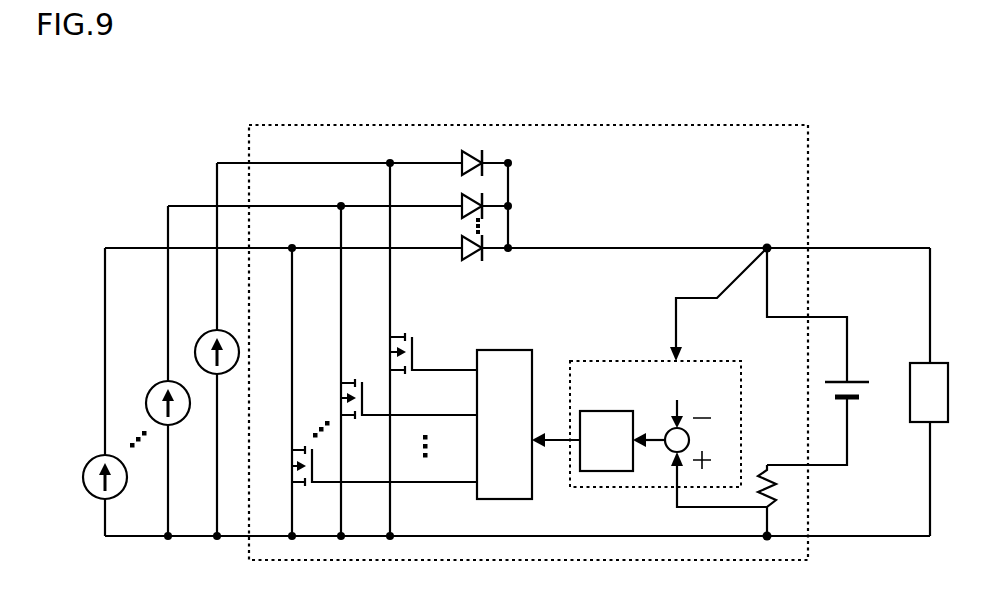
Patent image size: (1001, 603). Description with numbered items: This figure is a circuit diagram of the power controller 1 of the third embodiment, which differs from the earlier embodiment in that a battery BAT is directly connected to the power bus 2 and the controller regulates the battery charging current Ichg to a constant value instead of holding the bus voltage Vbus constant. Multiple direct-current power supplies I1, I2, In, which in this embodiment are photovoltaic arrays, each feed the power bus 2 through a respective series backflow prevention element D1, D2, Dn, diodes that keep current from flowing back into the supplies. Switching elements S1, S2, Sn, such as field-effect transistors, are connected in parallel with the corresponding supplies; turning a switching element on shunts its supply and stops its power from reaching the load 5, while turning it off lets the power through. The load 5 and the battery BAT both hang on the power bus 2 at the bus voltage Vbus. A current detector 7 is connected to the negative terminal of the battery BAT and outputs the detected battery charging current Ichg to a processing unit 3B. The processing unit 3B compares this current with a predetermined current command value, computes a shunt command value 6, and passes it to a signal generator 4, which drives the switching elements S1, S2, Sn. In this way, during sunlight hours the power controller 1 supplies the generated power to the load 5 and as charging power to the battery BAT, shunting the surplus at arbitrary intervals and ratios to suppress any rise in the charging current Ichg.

The power controller 1 is at (248, 157).
The power bus 2 is at (626, 248).
The processing unit 3B is at (631, 360).
The signal generator 4 is at (490, 350).
The load 5 is at (912, 363).
The shunt command value 6 is at (560, 437).
The current detector 7 is at (763, 463).
The backflow prevention element D1 is at (447, 152).
The backflow prevention element D2 is at (447, 195).
The backflow prevention element Dn is at (447, 238).
The switching element S1 is at (391, 352).
The switching element S2 is at (343, 398).
The switching element Sn is at (293, 466).
The DC power supply I1 is at (211, 331).
The DC power supply I2 is at (152, 386).
The DC power supply In is at (90, 460).
The bus voltage Vbus is at (765, 247).
The battery BAT is at (853, 402).
The battery charging current Ichg is at (676, 507).